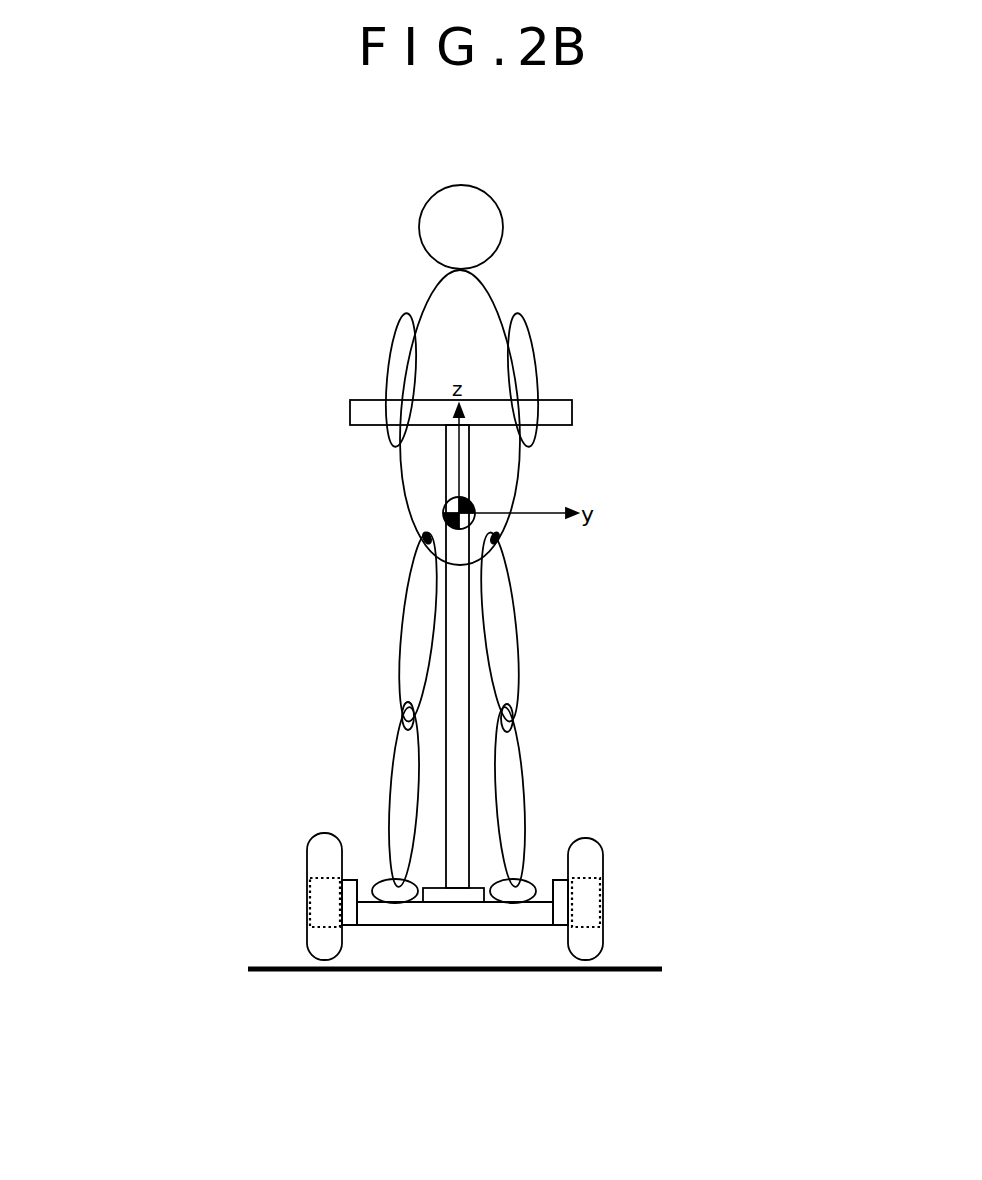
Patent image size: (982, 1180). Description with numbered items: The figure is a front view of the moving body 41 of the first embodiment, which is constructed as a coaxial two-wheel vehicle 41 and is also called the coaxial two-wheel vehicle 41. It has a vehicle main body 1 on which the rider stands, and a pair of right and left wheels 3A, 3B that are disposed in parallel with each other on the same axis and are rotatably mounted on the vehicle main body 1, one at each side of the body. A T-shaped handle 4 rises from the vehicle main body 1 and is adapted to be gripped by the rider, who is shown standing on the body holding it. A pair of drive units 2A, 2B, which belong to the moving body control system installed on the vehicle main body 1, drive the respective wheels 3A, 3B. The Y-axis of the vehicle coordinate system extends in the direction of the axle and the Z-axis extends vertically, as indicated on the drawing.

The vehicle main body 1 is at (447, 912).
The drive unit 2A is at (350, 913).
The drive unit 2B is at (558, 913).
The wheel 3A is at (320, 948).
The wheel 3B is at (588, 948).
The T-shaped handle 4 is at (458, 685).
The moving body 41 is at (618, 288).